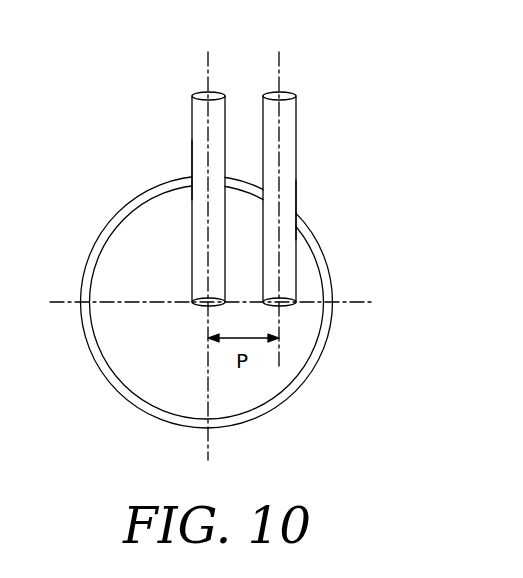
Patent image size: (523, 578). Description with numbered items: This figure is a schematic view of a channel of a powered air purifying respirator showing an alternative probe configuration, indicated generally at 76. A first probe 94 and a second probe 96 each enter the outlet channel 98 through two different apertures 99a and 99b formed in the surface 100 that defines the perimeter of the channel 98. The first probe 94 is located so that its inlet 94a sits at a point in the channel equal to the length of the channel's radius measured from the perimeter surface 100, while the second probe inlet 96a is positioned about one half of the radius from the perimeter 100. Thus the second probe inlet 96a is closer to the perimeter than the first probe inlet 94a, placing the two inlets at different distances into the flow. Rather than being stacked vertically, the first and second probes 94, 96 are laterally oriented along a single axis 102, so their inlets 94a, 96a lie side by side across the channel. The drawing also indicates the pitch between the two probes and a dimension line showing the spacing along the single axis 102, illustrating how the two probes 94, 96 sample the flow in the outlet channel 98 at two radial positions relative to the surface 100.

The anode assembly 76 is at (244, 60).
The first probe 94 is at (184, 240).
The first probe inlet 94a is at (189, 319).
The second probe 96 is at (297, 135).
The second probe inlet 96a is at (298, 317).
The outlet channel 98 is at (160, 388).
The aperture 99a is at (192, 178).
The aperture 99b is at (296, 213).
The surface defining the perimeter 100 is at (272, 383).
The single axis 102 is at (314, 300).